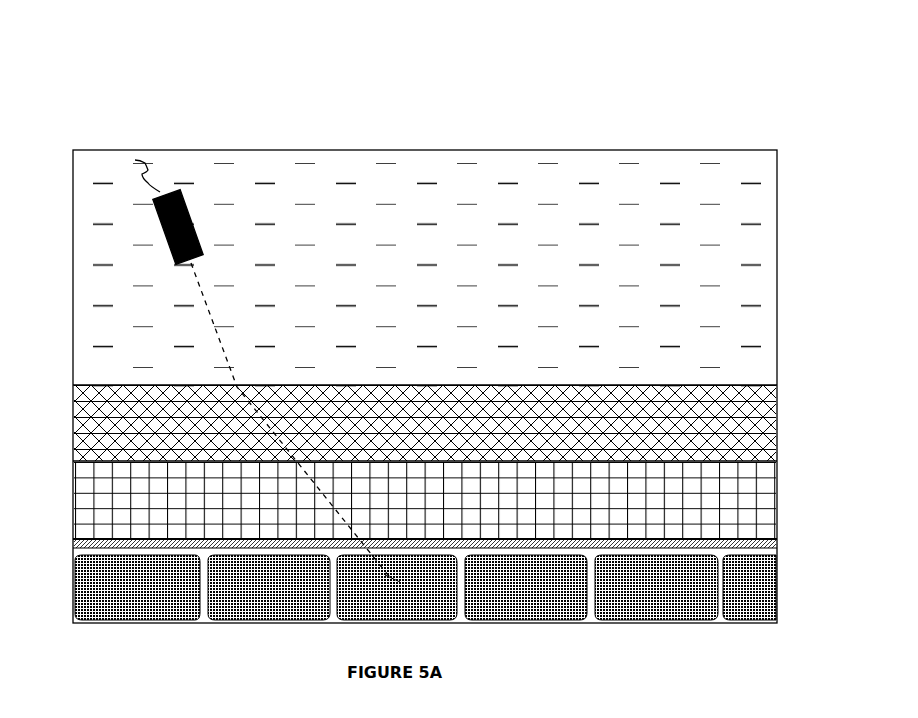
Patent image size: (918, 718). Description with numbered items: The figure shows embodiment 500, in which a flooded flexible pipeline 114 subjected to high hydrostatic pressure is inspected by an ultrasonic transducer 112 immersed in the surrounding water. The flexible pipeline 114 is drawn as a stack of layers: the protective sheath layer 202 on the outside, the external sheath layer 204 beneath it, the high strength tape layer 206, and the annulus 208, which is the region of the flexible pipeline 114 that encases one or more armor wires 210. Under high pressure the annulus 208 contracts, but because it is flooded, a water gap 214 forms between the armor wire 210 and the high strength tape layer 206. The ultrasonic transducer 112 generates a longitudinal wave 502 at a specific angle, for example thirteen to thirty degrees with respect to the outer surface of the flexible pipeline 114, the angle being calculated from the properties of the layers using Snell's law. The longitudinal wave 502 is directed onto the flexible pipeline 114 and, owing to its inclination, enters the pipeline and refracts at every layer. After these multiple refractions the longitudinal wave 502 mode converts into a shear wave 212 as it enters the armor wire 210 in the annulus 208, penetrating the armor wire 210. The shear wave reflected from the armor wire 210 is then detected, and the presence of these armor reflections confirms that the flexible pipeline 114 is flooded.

The embodiment 500 is at (130, 75).
The ultrasonic transducer 112 is at (193, 232).
The longitudinal wave 502 is at (223, 357).
The flexible pipeline 114 is at (785, 385).
The protective sheath layer 202 is at (83, 437).
The external sheath layer 204 is at (83, 488).
The high strength tape layer 206 is at (83, 545).
The annulus 208 is at (87, 622).
The armor wire 210 is at (148, 585).
The shear wave 212 is at (413, 583).
The water gap 214 is at (593, 555).